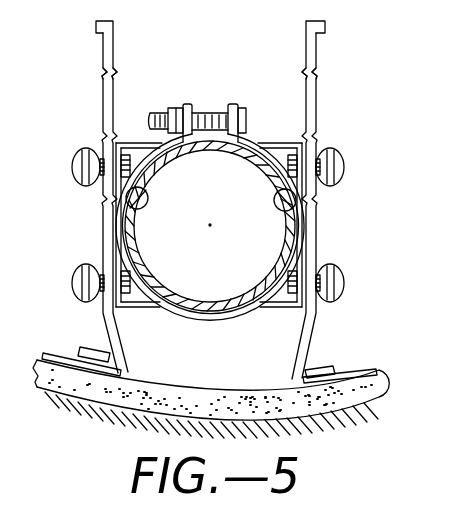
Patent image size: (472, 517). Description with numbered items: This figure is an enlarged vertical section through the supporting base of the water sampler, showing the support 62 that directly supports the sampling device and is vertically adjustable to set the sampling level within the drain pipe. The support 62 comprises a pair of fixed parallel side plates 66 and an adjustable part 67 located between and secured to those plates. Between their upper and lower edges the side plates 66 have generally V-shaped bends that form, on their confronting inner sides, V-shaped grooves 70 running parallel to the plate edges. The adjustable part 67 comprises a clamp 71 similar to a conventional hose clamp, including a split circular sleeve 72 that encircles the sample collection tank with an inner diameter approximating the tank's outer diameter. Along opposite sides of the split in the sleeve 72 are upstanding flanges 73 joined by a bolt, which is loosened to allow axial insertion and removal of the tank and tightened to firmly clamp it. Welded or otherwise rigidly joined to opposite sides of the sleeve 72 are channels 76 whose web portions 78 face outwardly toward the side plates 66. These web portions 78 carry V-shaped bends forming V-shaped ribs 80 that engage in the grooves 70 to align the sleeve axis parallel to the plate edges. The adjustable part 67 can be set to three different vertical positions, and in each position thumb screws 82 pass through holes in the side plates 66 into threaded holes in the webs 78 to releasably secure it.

The support 62 is at (354, 193).
The side plates 66 is at (104, 40).
The adjustable part 67 is at (129, 133).
The V-shaped grooves 70 is at (110, 72).
The clamp 71 is at (243, 121).
The split circular sleeve 72 is at (212, 322).
The upstanding flanges 73 is at (232, 104).
The channels 76 is at (143, 308).
The web portions 78 is at (150, 222).
The V-shaped ribs 80 is at (140, 212).
The thumb screws 82 is at (78, 152).